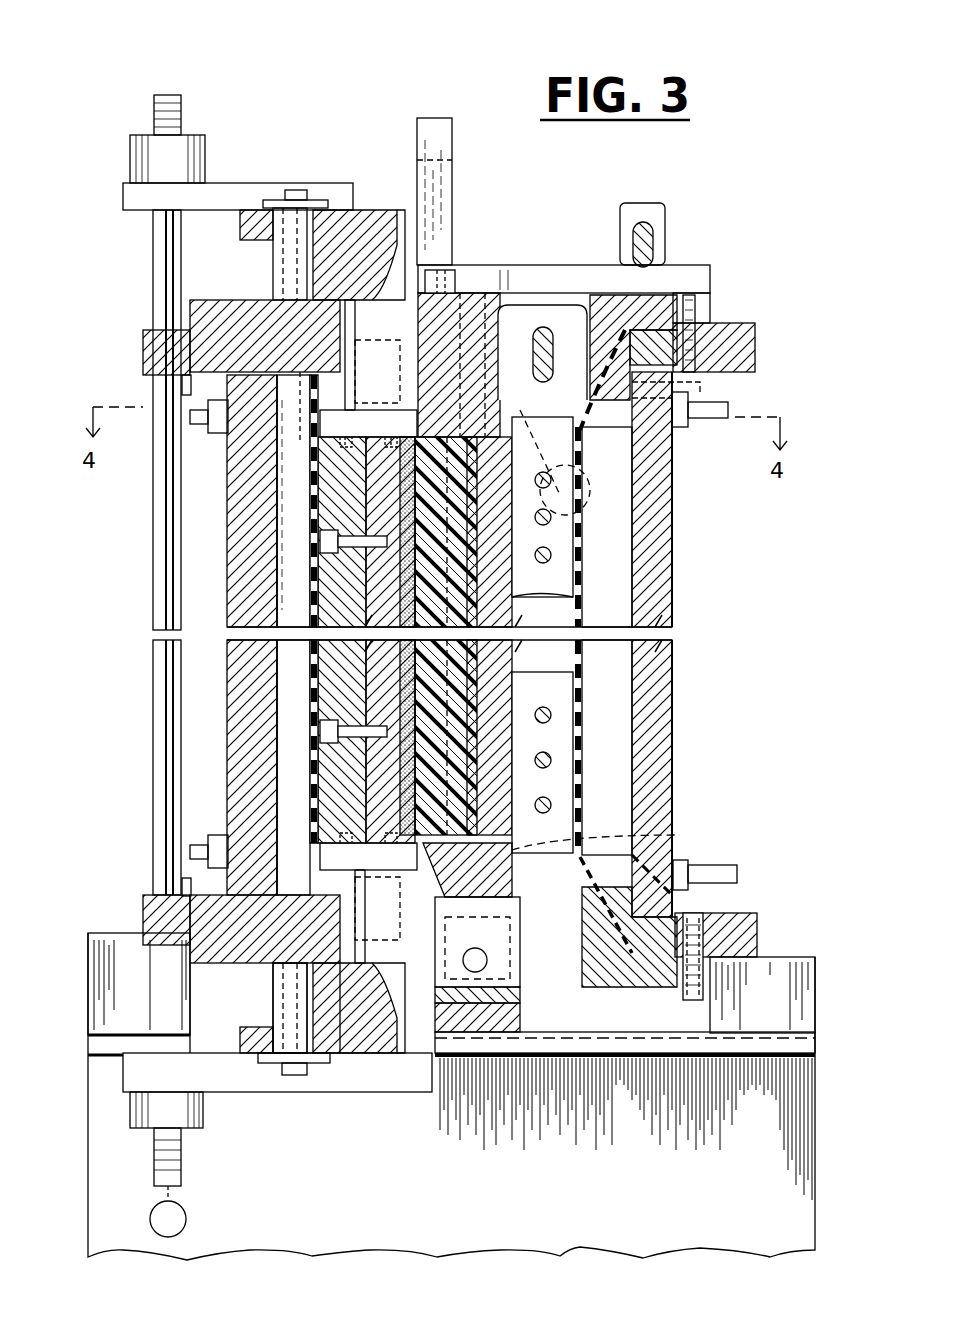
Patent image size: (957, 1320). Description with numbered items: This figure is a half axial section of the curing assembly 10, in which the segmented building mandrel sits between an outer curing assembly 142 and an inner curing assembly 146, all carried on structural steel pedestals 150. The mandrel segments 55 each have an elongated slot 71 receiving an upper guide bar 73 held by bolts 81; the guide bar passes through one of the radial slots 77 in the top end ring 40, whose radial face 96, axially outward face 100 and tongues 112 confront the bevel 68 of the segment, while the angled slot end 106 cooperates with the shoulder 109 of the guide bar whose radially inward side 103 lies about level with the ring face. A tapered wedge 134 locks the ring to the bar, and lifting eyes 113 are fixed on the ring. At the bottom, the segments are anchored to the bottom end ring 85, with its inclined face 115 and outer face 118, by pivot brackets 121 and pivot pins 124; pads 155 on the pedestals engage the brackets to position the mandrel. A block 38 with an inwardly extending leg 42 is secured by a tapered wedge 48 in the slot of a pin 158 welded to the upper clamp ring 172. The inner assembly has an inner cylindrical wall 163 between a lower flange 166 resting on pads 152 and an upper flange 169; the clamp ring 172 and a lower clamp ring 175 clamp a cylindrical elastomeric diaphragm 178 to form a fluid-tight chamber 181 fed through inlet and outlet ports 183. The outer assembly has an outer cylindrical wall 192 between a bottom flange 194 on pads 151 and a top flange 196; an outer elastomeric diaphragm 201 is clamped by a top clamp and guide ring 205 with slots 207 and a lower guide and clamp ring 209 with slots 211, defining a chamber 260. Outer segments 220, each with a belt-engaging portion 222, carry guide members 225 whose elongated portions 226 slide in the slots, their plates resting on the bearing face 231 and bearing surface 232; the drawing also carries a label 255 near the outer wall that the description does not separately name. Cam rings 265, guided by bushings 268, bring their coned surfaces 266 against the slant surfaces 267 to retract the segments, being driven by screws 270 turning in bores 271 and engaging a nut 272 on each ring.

The curing assembly 10 is at (710, 592).
The block 38 is at (438, 300).
The top end ring 40 is at (468, 345).
The inwardly extending leg 42 is at (510, 275).
The tapered wedge 48 is at (648, 255).
The segments 55 is at (632, 668).
The bevel 68 is at (578, 465).
The elongated slot 71 is at (515, 580).
The upper guide bar 73 is at (576, 345).
The radial slots 77 is at (488, 870).
The bolts 81 is at (552, 555).
The bottom end ring 85 is at (503, 925).
The radial face 96 is at (503, 412).
The axially outward face 100 is at (573, 320).
The radially inward side 103 is at (703, 385).
The radially outward end of slot 106 is at (541, 352).
The shoulder 109 is at (488, 425).
The tongues 112 is at (568, 505).
The lifting eyes 113 is at (440, 135).
The radially inward extending face 115 is at (663, 832).
The axially outer face 118 is at (590, 960).
The pivot brackets 121 is at (503, 1000).
The pivot pins 124 is at (488, 1010).
The tapered wedge 134 is at (536, 330).
The outer curing assembly 142 is at (213, 722).
The inner curing assembly 146 is at (688, 566).
The pedestals 150 is at (784, 1136).
The pads 151 is at (93, 1010).
The pads 152 is at (766, 1016).
The pads 155 is at (508, 1035).
The pin 158 is at (653, 235).
The inner cylindrical wall 163 is at (672, 510).
The lower flange 166 is at (757, 925).
The upper flange 169 is at (738, 343).
The upper clamp ring 172 is at (698, 312).
The lower clamp ring 175 is at (633, 960).
The cylindrical elastomeric diaphragm 178 is at (638, 815).
The fluid-tight chamber 181 is at (645, 748).
The inlet and outlet ports 183 is at (238, 440).
The outer cylindrical wall 192 is at (248, 540).
The bottom flange 194 is at (143, 915).
The top flange 196 is at (143, 370).
The outer cylindrical elastomeric diaphragm 201 is at (303, 605).
The top clamp and guide ring 205 is at (243, 318).
The radially extending slots 207 is at (358, 310).
The guide and clamp ring 209 is at (246, 945).
The radially extending slots 211 is at (343, 945).
The outer segments 220 is at (248, 750).
The belt-engaging portion 222 is at (340, 522).
The guide member 225 is at (376, 375).
The axially elongated portion 226 is at (368, 930).
The axially inward bearing face 231 is at (293, 767).
The bearing surface 232 is at (293, 501).
The line 255 is at (308, 620).
The chamber 260 is at (288, 685).
The cam rings 265 is at (366, 222).
The coned surfaces 266 is at (396, 225).
The slant surfaces 267 is at (356, 330).
The bushings 268 is at (300, 225).
The screws 270 is at (181, 112).
The bores 271 is at (186, 395).
The nut 272 is at (205, 148).